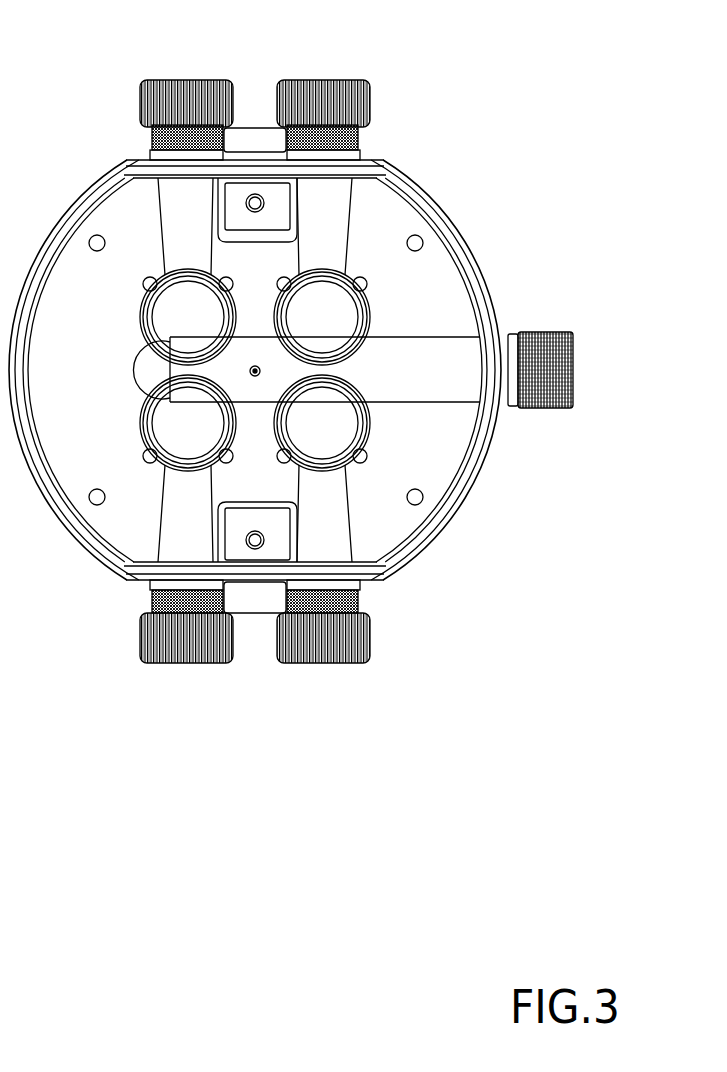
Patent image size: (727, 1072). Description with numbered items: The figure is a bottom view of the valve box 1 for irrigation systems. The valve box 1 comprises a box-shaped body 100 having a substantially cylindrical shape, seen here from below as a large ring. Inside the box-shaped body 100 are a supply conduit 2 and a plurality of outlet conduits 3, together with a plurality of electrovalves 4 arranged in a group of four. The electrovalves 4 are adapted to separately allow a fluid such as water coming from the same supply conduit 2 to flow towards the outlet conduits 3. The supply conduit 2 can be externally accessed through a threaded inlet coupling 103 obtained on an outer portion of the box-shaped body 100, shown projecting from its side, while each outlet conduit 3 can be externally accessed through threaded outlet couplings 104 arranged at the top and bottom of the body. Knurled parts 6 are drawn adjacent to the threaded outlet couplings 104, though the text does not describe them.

The valve box 1 is at (340, 365).
The supply conduit 2 is at (399, 385).
The outlet conduits 3 is at (181, 234).
The electrovalves 4 is at (180, 332).
The knurled knobs 6 is at (187, 79).
The box-shaped body 100 is at (480, 475).
The threaded inlet coupling 103 is at (573, 368).
The threaded outlet couplings 104 is at (152, 135).